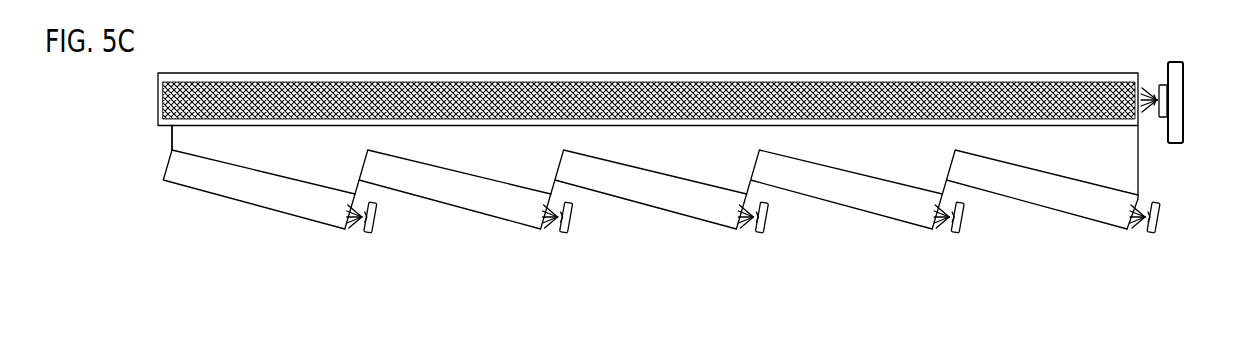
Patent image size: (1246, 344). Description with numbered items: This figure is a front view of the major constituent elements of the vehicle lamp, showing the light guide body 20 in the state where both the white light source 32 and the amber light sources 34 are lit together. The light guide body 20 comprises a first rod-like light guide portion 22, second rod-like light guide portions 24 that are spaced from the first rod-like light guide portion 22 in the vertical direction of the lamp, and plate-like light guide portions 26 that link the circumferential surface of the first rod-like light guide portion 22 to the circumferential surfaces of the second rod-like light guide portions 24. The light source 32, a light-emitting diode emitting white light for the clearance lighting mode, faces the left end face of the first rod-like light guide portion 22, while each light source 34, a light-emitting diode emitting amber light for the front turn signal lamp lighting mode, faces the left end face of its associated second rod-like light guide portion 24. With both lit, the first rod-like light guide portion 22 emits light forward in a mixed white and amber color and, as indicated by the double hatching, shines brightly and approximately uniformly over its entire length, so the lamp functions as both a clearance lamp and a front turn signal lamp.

The light guide body 20 is at (425, 72).
The first rod-like light guide portion 22 is at (693, 78).
The second rod-like light guide portion 24 is at (258, 197).
The plate-like light guide portion 26 is at (242, 147).
The light source 32 is at (1154, 80).
The light source 34 is at (381, 194).